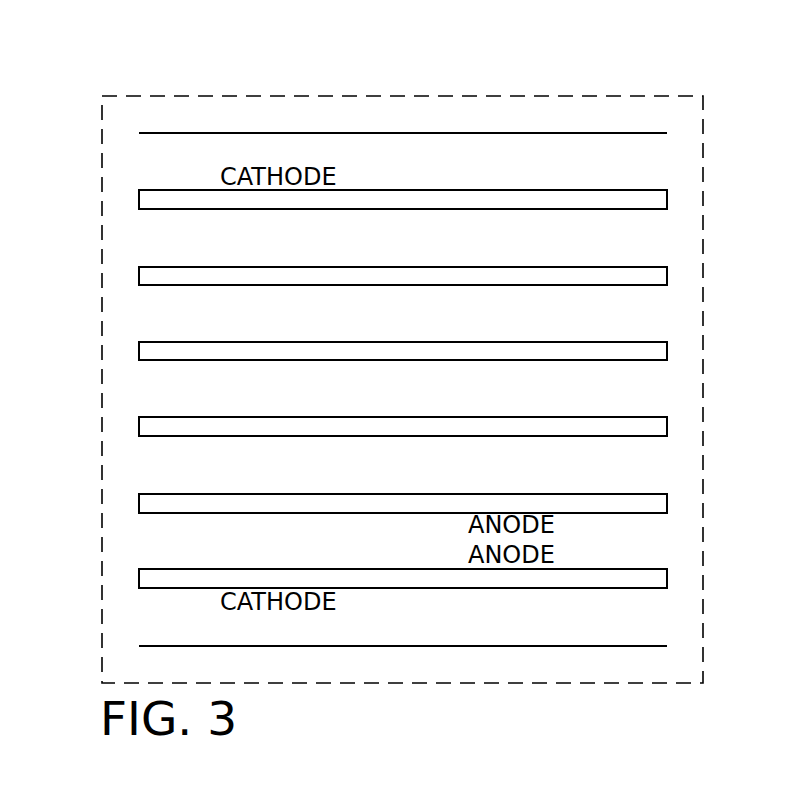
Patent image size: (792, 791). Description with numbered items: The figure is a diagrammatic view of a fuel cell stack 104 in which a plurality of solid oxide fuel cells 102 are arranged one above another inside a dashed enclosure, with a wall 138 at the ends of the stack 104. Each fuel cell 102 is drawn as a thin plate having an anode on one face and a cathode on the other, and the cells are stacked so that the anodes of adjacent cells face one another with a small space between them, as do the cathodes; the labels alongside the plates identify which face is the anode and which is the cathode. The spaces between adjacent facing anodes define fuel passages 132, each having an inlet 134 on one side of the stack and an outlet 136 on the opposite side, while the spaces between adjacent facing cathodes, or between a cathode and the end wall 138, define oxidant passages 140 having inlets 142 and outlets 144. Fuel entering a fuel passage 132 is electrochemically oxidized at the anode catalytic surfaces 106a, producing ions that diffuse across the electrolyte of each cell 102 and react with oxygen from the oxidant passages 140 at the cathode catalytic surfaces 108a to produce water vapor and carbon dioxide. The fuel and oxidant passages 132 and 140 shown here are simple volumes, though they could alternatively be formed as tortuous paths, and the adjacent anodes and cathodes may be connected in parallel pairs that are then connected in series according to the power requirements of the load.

The stack 104 is at (202, 96).
The wall 138 is at (323, 132).
The solid oxide fuel cell 102 is at (347, 200).
The fuel passage 132 is at (430, 250).
The oxidant passage 140 is at (430, 328).
The anode catalytic surface 106a is at (232, 417).
The cathode catalytic surface 108a is at (440, 437).
The inlet 134 is at (133, 389).
The outlet 136 is at (673, 389).
The outlet 144 is at (133, 468).
The inlet 142 is at (673, 468).